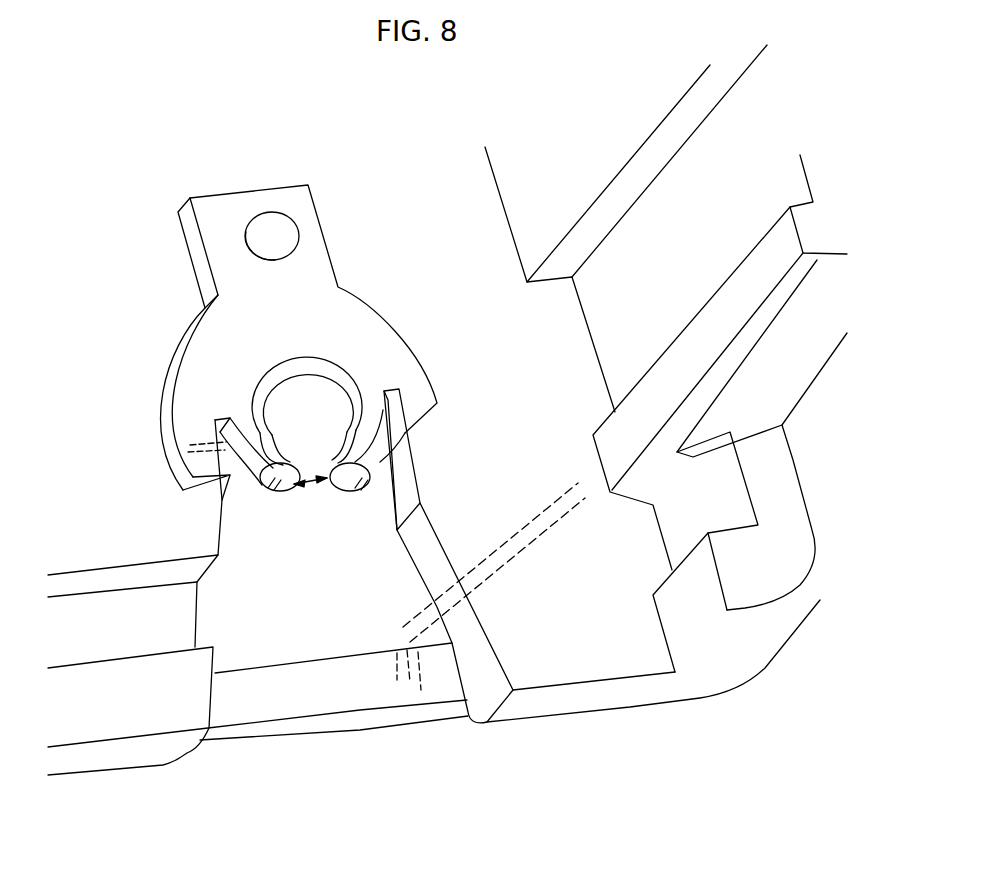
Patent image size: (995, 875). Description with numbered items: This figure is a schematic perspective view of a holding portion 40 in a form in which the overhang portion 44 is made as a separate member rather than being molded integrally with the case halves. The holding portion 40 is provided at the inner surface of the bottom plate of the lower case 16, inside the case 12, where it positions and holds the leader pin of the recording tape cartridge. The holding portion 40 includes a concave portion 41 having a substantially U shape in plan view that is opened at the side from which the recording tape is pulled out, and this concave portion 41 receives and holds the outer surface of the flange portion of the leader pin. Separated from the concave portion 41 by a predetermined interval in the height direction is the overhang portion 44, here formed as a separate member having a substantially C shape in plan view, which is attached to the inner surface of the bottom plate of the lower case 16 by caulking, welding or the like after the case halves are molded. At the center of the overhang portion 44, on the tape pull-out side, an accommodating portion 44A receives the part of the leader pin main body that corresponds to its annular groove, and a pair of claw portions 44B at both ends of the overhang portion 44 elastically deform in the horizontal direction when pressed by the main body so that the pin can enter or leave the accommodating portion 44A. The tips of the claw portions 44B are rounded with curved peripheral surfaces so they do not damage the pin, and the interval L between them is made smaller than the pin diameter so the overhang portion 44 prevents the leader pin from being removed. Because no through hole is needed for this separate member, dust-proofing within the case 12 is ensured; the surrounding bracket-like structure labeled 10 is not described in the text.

The bracket / holder 10 is at (808, 433).
The case 12 is at (680, 706).
The lower case 16 is at (113, 772).
The holding portion 40 is at (350, 736).
The concave portion 41 is at (308, 607).
The overhang portion 44 is at (215, 337).
The accommodating portion 44A is at (314, 367).
The claw portions 44B is at (362, 466).
The interval L is at (311, 488).